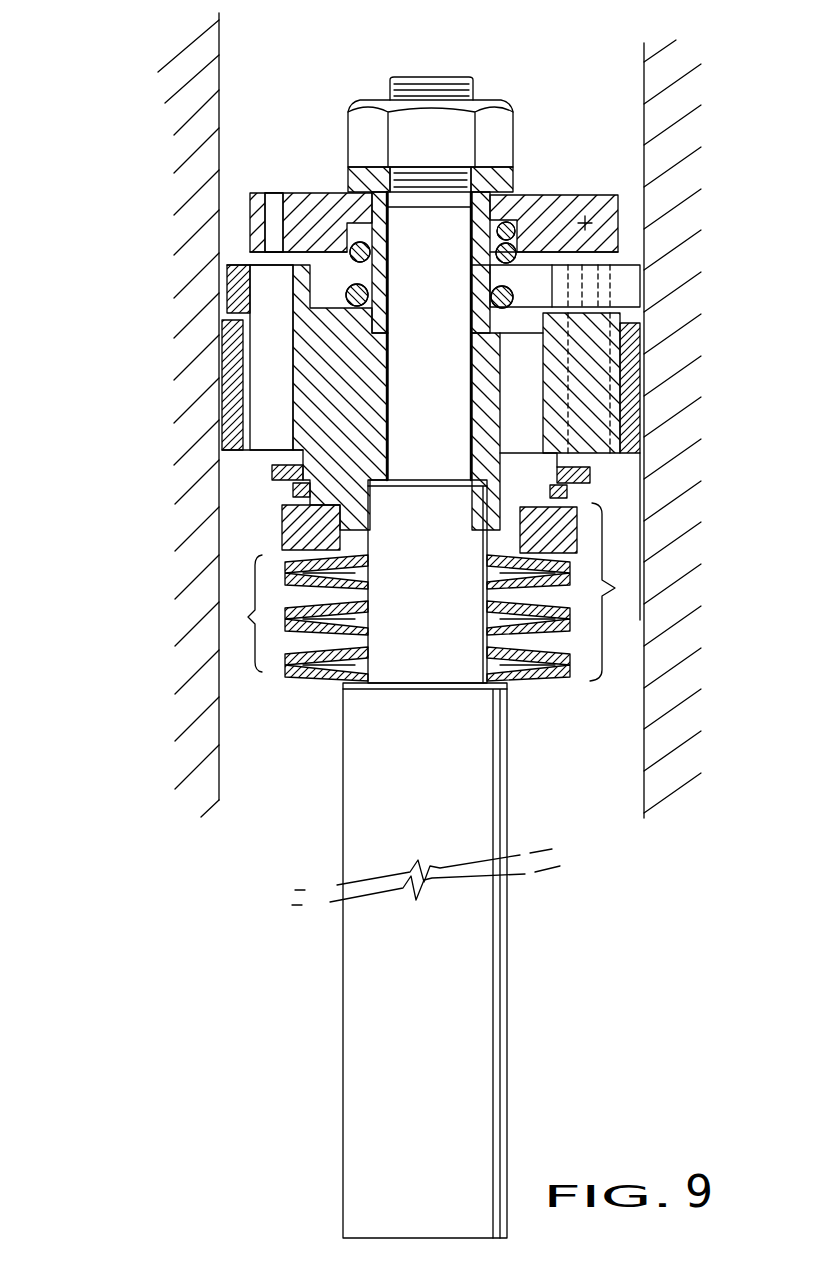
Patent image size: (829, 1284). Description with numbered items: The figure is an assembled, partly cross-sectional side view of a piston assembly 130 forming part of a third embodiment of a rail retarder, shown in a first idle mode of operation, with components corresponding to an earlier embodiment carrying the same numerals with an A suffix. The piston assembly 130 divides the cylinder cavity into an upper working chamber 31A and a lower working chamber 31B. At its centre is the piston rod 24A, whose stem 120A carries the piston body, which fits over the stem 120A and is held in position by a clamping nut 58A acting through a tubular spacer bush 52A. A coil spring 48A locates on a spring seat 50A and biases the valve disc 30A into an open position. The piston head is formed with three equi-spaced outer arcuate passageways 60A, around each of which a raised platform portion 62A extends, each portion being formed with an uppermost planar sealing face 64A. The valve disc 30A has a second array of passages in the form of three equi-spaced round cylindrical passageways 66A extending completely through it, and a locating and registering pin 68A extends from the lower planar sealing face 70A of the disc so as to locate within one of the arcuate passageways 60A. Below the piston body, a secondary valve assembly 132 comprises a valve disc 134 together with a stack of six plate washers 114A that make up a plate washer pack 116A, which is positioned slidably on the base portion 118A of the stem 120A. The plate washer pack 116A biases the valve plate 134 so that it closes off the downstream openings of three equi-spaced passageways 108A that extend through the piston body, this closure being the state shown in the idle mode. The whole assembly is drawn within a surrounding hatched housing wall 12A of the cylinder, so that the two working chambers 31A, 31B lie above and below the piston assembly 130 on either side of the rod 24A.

The housing wall 12A is at (240, 310).
The piston rod 24A is at (493, 753).
The valve disc 30A is at (323, 193).
The upper working chamber 31A is at (385, 110).
The lower working chamber 31B is at (434, 960).
The coil spring 48A is at (515, 232).
The spring seat 50A is at (365, 318).
The tubular spacer bush 52A is at (515, 178).
The clamping nut 58A is at (517, 130).
The outer arcuate passageway 60A is at (268, 400).
The raised platform portion 62A is at (297, 277).
The planar sealing face 64A is at (243, 193).
The round cylindrical passageway 66A is at (273, 207).
The locating and registering pin 68A is at (605, 305).
The lower planar sealing face 70A is at (560, 260).
The passageway 108A is at (628, 410).
The plate washer 114A is at (558, 632).
The plate washer pack 116A is at (245, 617).
The base portion 118A is at (443, 612).
The stem 120A is at (456, 371).
The piston assembly 130 is at (577, 153).
The secondary valve assembly 132 is at (640, 592).
The valve disc 134 is at (577, 533).